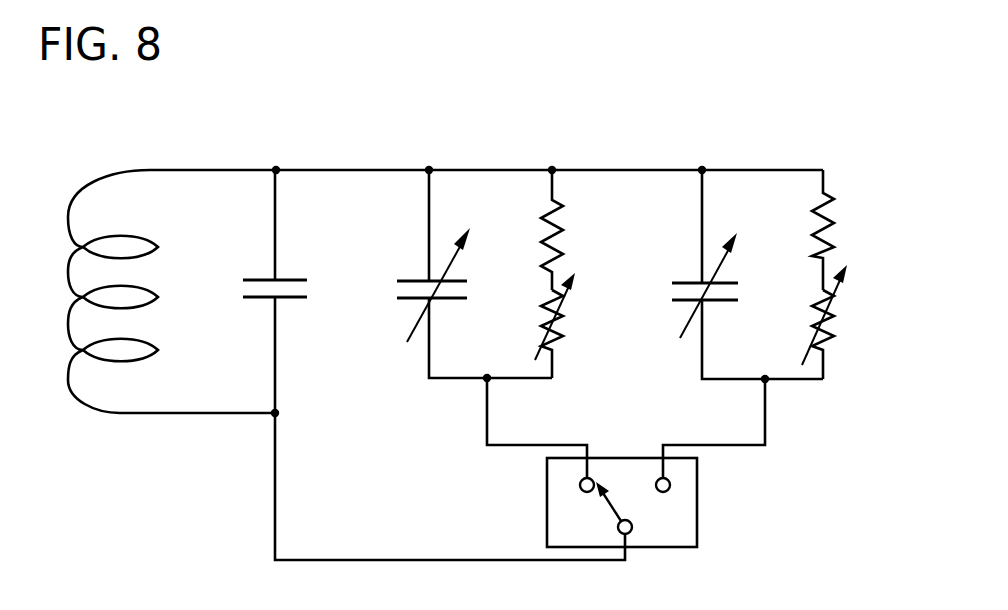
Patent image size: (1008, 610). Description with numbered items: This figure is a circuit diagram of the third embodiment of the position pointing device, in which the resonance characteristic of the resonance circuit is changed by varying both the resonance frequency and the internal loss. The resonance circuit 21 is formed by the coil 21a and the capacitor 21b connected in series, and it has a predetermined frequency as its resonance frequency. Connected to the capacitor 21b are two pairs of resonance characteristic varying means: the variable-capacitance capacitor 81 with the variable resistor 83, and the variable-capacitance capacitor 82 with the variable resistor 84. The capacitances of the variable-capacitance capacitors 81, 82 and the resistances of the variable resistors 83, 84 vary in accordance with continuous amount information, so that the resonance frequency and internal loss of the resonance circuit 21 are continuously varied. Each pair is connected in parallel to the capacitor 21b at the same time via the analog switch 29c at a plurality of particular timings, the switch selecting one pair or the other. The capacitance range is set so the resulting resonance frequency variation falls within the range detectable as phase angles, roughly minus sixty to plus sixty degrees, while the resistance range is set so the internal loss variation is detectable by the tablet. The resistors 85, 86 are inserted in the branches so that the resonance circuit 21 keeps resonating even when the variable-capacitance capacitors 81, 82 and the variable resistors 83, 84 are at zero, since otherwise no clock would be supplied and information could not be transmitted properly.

The resonance circuit 21 is at (133, 176).
The coil 21a is at (110, 415).
The capacitor 21b is at (255, 298).
The variable-capacitance capacitor 81 is at (412, 278).
The variable-capacitance capacitor 82 is at (693, 282).
The variable resistor 83 is at (543, 320).
The variable resistor 84 is at (827, 337).
The resistor 85 is at (545, 238).
The resistor 86 is at (833, 233).
The analog switch 29c is at (697, 502).